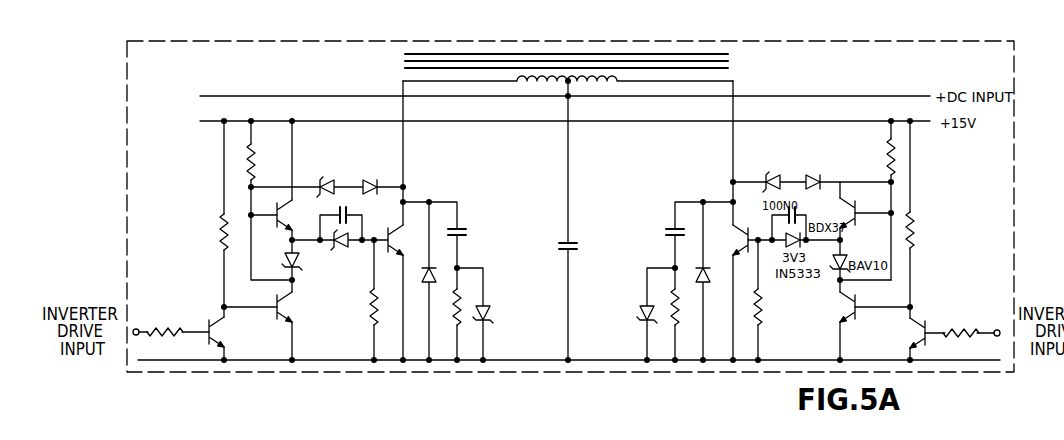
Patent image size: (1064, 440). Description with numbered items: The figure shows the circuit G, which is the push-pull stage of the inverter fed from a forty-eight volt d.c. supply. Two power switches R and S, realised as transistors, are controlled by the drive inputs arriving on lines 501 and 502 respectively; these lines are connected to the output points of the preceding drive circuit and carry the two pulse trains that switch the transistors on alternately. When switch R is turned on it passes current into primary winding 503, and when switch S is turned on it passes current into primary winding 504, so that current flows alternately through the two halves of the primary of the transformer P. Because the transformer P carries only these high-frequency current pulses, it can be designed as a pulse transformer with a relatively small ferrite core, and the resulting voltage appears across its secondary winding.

The inverter drive input line 501 is at (160, 326).
The inverter drive input line 502 is at (985, 330).
The primary winding 503 is at (545, 84).
The primary winding 504 is at (590, 88).
The transformer P is at (741, 74).
The inverter circuit G is at (570, 206).
The power switch R is at (380, 254).
The power switch S is at (744, 258).